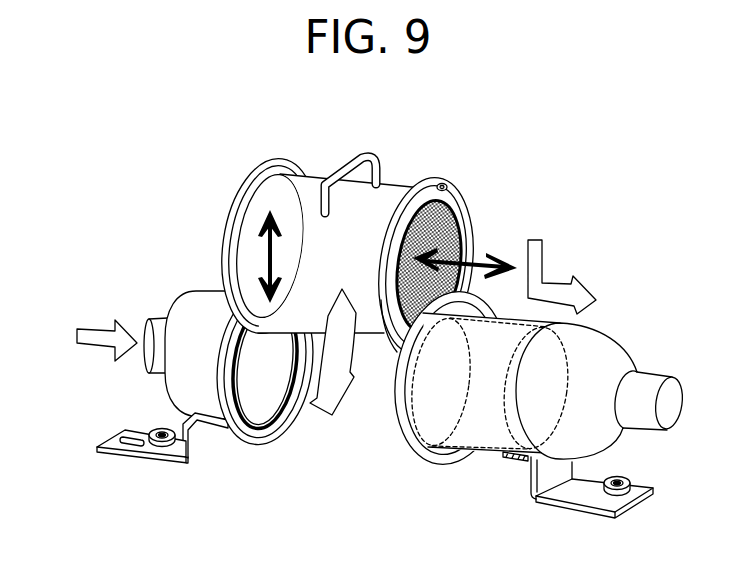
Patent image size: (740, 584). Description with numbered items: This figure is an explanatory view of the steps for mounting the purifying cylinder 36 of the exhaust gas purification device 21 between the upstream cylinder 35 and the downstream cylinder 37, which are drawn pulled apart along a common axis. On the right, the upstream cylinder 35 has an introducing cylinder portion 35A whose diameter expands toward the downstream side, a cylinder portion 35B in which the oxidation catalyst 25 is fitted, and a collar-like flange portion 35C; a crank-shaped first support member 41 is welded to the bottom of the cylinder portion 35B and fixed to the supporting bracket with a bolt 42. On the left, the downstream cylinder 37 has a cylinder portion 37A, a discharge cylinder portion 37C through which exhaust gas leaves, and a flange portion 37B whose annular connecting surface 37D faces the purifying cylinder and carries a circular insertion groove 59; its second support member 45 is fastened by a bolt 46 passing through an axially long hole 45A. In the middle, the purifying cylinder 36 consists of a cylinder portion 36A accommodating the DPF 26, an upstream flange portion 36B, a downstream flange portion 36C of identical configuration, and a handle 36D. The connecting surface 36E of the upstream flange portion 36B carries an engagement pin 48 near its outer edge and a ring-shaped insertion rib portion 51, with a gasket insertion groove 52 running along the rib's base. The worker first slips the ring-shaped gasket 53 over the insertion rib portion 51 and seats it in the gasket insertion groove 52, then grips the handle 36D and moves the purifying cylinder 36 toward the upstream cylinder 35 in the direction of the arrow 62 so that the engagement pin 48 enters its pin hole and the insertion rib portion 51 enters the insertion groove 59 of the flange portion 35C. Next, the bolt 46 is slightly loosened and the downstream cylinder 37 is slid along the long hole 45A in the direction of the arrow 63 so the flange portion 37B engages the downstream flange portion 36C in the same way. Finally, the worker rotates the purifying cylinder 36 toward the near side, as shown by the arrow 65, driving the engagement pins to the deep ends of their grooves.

The exhaust gas purification device 21 is at (191, 137).
The oxidation catalyst 25 is at (410, 428).
The DPF 26 is at (456, 265).
The upstream cylinder 35 is at (535, 407).
The introducing cylinder portion 35A is at (620, 361).
The cylinder portion 35B is at (487, 456).
The flange portion 35C is at (450, 409).
The purifying cylinder 36 is at (352, 245).
The cylinder portion 36A is at (283, 197).
The upstream flange portion 36B is at (446, 244).
The downstream flange portion 36C is at (267, 160).
The handle 36D is at (340, 160).
The connecting surface 36E is at (384, 352).
The downstream cylinder 37 is at (158, 329).
The cylinder portion 37A is at (200, 291).
The flange portion 37B is at (286, 389).
The discharge cylinder portion 37C is at (158, 327).
The connecting surface 37D is at (272, 436).
The first support member 41 is at (596, 502).
The bolt 42 is at (626, 482).
The second support member 45 is at (142, 443).
The long hole 45A is at (137, 449).
The bolt 46 is at (157, 426).
The engagement pin 48 is at (448, 180).
The insertion rib portion 51 is at (471, 217).
The gasket insertion groove 52 is at (471, 241).
The gasket 53 is at (433, 194).
The insertion groove 59 is at (248, 434).
The arrow 62 is at (540, 265).
The arrow 63 is at (78, 344).
The arrow 65 is at (335, 307).